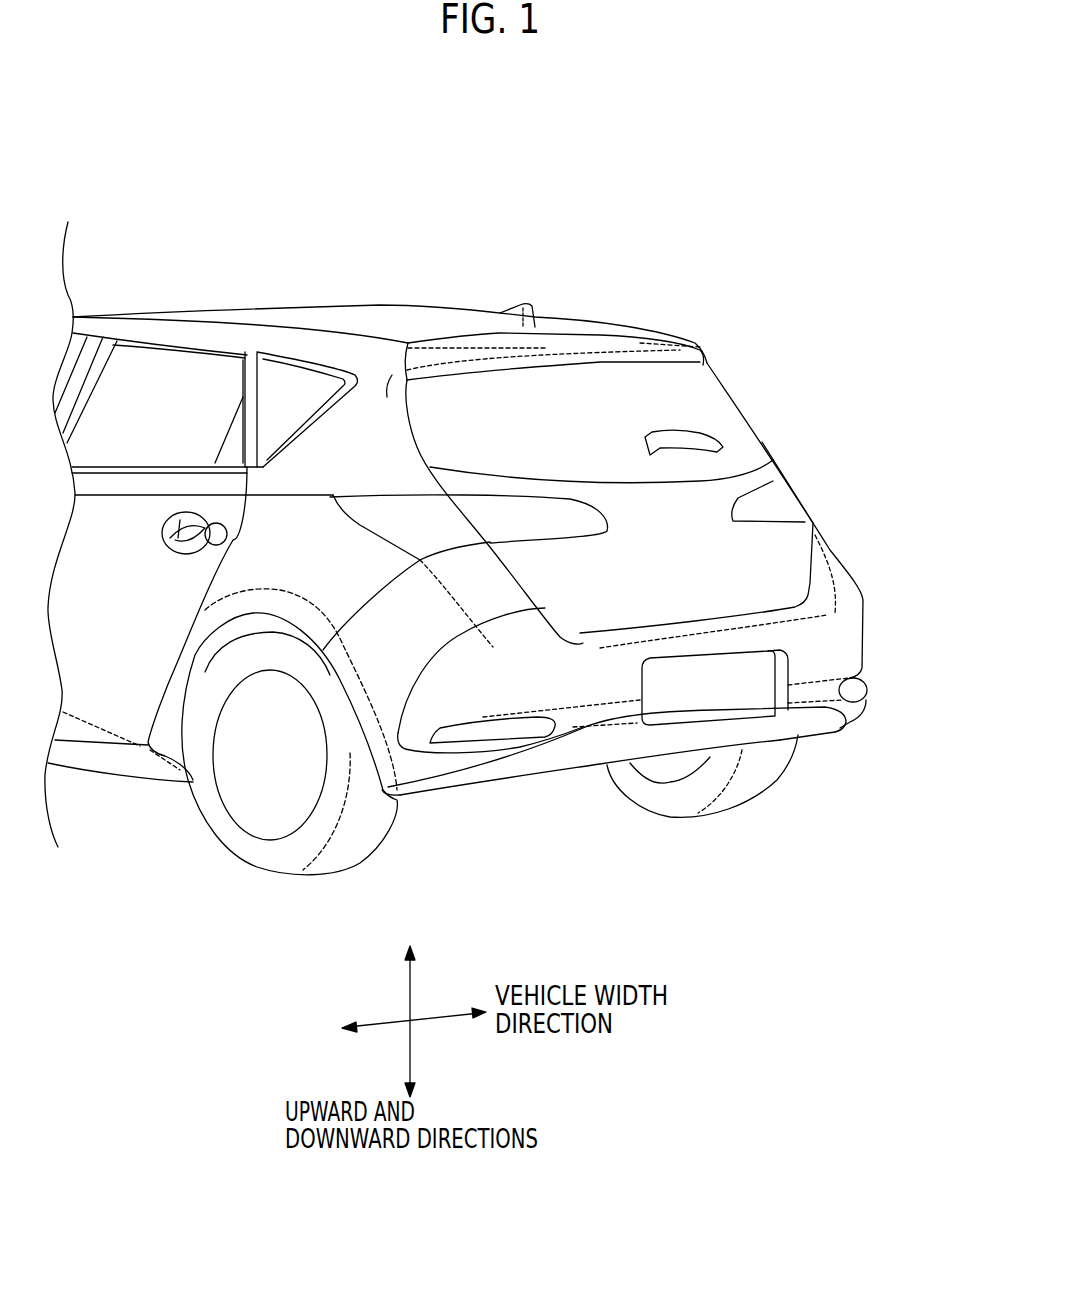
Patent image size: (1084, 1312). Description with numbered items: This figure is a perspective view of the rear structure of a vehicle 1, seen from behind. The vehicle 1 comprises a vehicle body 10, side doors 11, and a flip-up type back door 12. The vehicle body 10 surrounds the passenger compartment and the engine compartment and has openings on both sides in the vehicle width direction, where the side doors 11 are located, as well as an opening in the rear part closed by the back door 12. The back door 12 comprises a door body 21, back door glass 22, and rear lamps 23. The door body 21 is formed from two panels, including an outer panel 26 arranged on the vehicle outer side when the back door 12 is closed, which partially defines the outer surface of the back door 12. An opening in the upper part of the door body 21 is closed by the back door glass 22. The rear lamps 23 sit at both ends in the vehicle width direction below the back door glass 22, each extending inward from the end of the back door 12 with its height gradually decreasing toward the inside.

The vehicle 1 is at (245, 234).
The vehicle body 10 is at (362, 348).
The side doors 11 is at (105, 675).
The back door 12 is at (773, 557).
The door body 21 is at (595, 613).
The back door glass 22 is at (707, 408).
The rear lamps 23 is at (517, 520).
The outer panel 26 is at (753, 590).